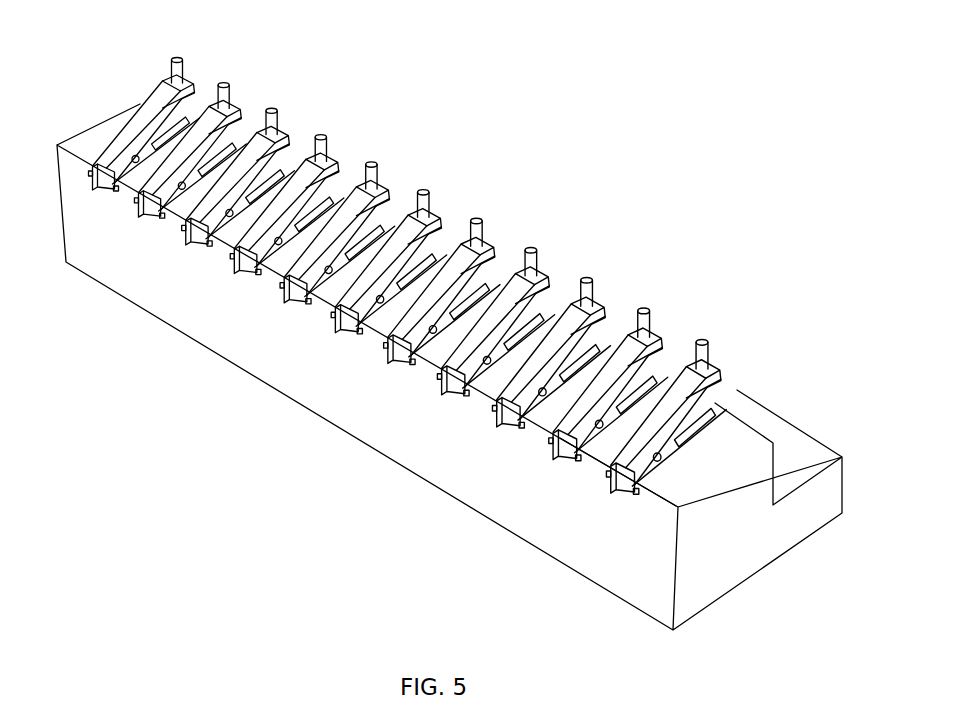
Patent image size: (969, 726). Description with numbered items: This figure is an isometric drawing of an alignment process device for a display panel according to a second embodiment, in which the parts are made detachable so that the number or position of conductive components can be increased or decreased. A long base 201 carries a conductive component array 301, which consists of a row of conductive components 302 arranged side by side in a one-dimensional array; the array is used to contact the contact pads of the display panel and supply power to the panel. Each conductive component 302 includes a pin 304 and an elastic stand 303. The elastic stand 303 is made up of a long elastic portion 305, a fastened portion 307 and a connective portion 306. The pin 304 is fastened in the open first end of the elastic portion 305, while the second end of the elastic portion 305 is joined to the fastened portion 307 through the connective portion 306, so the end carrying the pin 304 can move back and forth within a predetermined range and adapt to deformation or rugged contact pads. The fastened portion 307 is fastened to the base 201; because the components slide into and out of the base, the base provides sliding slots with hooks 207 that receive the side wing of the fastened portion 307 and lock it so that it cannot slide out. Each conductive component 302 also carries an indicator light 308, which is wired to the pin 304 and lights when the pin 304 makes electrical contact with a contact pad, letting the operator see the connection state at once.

The base 201 is at (167, 290).
The hook 207 is at (607, 465).
The conductive component array 301 is at (728, 347).
The conductive component 302 is at (608, 457).
The elastic stand 303 is at (670, 447).
The pin 304 is at (710, 355).
The elastic portion 305 is at (680, 383).
The connective portion 306 is at (630, 463).
The fastened portion 307 is at (693, 412).
The indicator light 308 is at (657, 455).